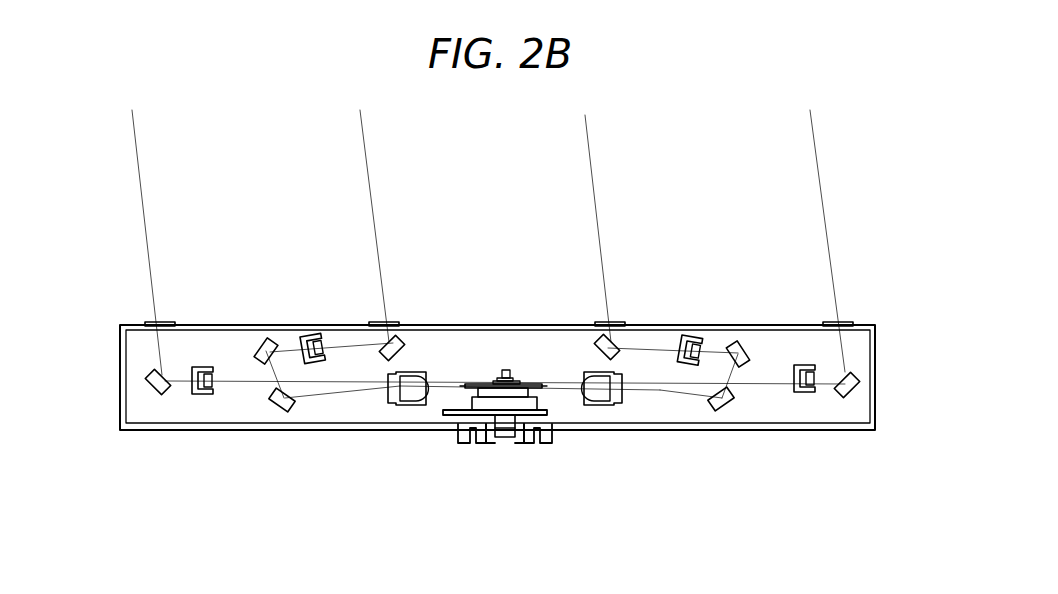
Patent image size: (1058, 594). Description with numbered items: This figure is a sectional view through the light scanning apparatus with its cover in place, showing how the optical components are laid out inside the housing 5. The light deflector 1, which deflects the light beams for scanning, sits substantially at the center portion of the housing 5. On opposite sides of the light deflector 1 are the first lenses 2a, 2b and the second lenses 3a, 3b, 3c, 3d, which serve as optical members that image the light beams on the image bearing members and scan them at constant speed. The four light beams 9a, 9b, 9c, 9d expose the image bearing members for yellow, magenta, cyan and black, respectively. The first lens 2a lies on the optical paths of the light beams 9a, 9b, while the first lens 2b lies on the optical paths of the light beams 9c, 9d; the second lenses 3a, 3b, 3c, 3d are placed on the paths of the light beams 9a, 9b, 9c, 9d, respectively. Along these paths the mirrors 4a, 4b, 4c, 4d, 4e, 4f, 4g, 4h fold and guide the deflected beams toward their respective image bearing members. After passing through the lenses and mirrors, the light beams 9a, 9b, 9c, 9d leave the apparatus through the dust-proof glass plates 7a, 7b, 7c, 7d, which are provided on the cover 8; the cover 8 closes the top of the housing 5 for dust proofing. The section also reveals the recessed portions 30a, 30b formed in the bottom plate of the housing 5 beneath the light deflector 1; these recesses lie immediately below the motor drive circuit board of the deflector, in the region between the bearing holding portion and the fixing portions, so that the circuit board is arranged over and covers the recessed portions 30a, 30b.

The light deflector 1 is at (506, 366).
The first lens 2a is at (606, 404).
The first lens 2b is at (404, 402).
The second lens 3a is at (800, 365).
The second lens 3b is at (694, 336).
The second lens 3c is at (300, 338).
The second lens 3d is at (190, 370).
The mirror 4a is at (848, 388).
The mirror 4b is at (748, 362).
The mirror 4c is at (400, 335).
The mirror 4d is at (727, 405).
The mirror 4e is at (602, 342).
The mirror 4f is at (262, 343).
The mirror 4g is at (155, 388).
The mirror 4h is at (282, 405).
The housing 5 is at (875, 360).
The dust-proof glass plate 7a is at (842, 324).
The dust-proof glass plate 7b is at (616, 324).
The dust-proof glass plate 7c is at (372, 323).
The dust-proof glass plate 7d is at (148, 323).
The cover 8 is at (465, 326).
The light beam 9a is at (820, 190).
The light beam 9b is at (593, 192).
The light beam 9c is at (368, 188).
The light beam 9d is at (140, 188).
The recessed portion 30a is at (473, 443).
The recessed portion 30b is at (462, 443).